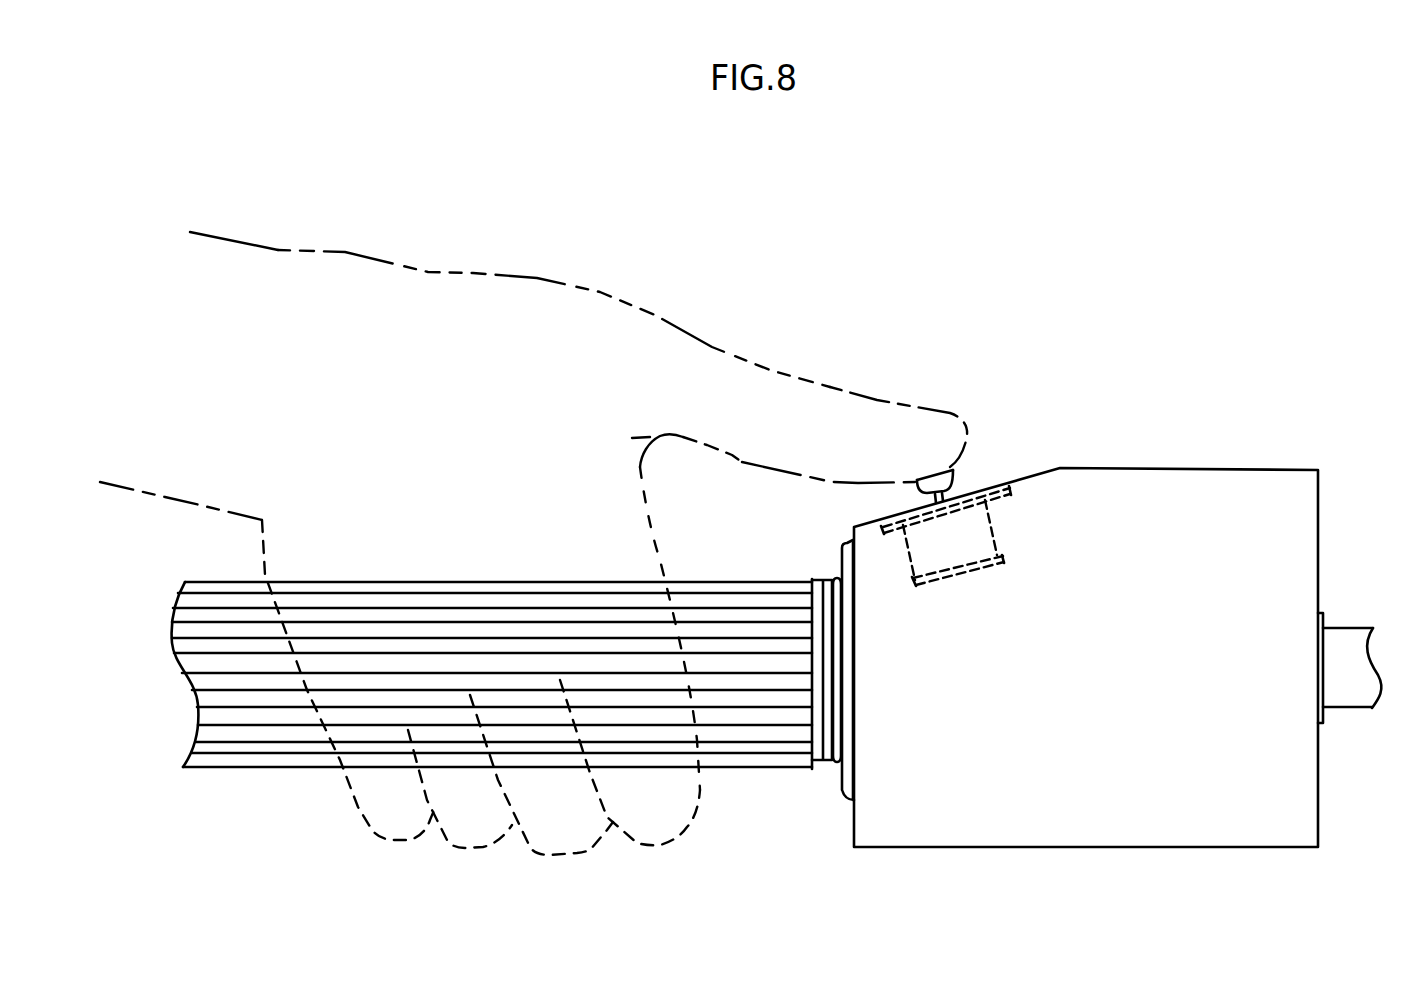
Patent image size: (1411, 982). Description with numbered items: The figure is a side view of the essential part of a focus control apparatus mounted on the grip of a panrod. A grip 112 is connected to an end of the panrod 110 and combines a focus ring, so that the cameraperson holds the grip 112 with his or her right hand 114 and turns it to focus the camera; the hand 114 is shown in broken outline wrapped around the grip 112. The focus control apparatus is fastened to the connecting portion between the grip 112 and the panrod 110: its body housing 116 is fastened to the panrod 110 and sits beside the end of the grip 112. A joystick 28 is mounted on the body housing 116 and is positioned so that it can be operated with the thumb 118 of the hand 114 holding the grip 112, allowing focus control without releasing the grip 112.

The joystick 28 is at (982, 468).
The panrod 110 is at (1350, 640).
The grip 112 is at (268, 717).
The right hand 114 is at (533, 511).
The body housing 116 is at (1147, 510).
The thumb 118 is at (922, 447).